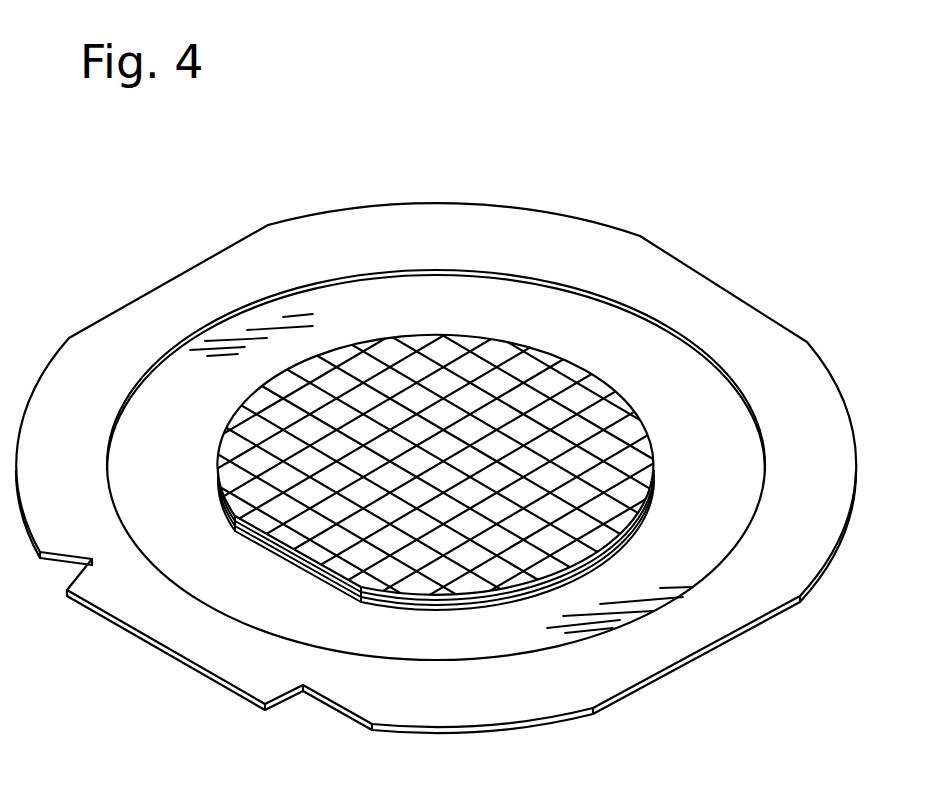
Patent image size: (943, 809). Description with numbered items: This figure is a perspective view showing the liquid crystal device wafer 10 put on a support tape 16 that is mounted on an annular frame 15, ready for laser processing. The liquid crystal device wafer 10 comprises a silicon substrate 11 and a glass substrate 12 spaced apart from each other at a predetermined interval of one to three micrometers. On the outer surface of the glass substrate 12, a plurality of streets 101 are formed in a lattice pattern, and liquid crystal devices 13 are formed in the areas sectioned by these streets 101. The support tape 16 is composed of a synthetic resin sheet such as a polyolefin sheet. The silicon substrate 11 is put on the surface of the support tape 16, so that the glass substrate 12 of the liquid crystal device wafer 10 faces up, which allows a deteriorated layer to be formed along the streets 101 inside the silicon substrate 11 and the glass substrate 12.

The liquid crystal device wafer 10 is at (440, 425).
The streets 101 is at (495, 388).
The silicon substrate 11 is at (423, 602).
The glass substrate 12 is at (578, 543).
The liquid crystal devices 13 is at (580, 455).
The annular frame 15 is at (545, 248).
The support tape 16 is at (170, 398).